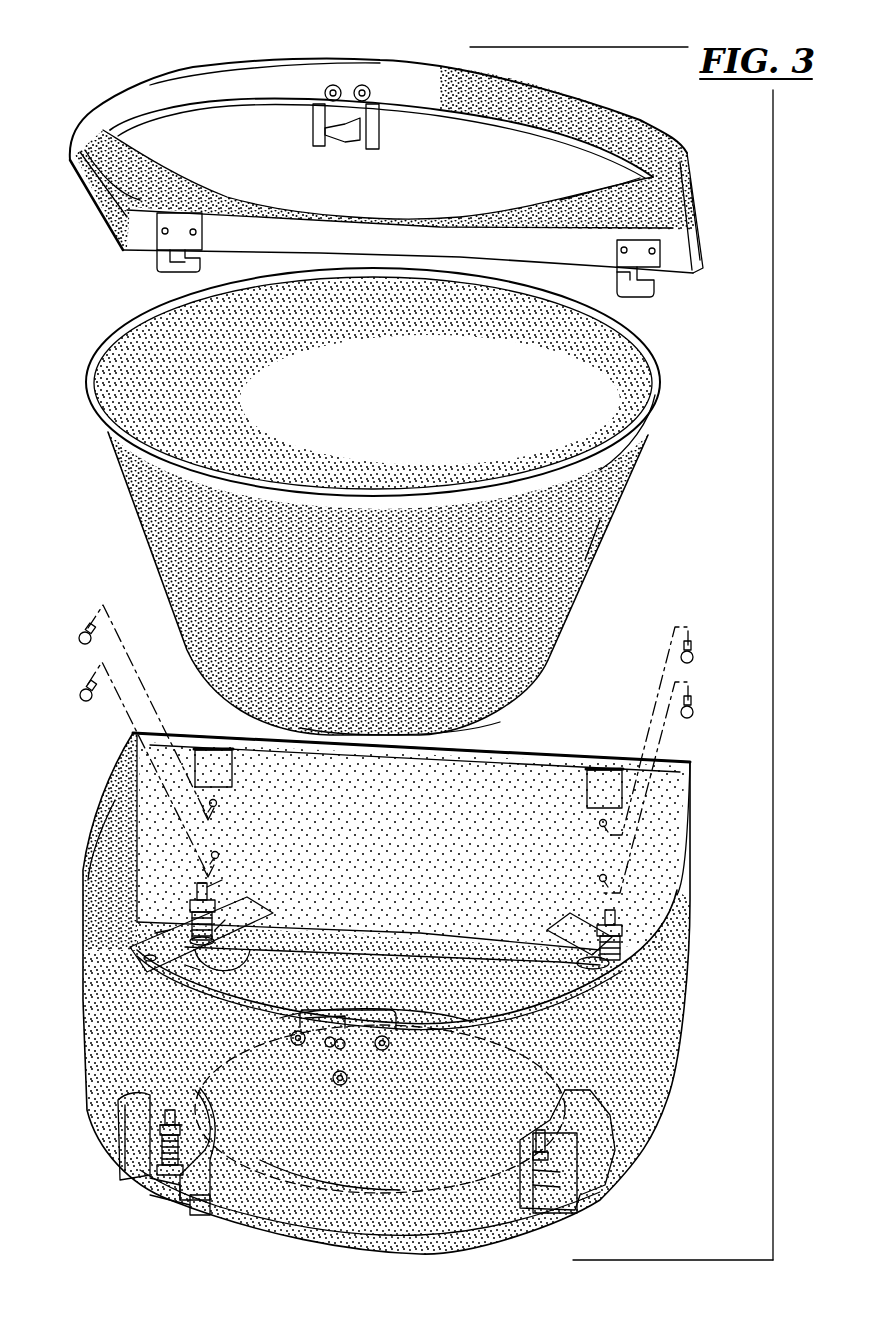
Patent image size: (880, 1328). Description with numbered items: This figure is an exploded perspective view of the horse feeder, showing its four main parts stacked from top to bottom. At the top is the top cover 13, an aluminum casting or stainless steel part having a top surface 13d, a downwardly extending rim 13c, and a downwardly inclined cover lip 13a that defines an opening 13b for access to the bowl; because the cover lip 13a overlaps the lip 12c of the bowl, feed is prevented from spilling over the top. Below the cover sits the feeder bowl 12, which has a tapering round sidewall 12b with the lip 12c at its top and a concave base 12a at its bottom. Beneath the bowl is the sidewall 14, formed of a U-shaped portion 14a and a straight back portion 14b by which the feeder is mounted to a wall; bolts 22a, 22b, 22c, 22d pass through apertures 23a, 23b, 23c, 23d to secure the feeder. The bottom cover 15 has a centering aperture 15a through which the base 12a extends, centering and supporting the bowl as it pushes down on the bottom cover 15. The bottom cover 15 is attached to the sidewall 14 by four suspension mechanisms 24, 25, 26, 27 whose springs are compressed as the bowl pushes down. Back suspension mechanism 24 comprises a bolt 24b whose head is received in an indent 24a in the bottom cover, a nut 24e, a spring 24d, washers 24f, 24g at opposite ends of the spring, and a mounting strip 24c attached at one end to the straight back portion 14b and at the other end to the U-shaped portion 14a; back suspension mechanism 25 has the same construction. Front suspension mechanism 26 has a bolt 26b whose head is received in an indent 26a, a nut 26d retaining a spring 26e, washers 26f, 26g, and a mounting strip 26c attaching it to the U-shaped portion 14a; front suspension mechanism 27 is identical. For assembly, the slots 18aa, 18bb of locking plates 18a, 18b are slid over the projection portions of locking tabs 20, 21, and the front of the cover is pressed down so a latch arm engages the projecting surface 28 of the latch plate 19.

The feeder bowl 12 is at (133, 510).
The concave base 12a is at (520, 703).
The tapering round sidewall 12b is at (580, 535).
The lip 12c is at (653, 393).
The top cover 13 is at (668, 128).
The cover lip 13a is at (653, 177).
The opening 13b is at (577, 200).
The downwardly extending rim 13c is at (190, 85).
The top surface 13d is at (138, 185).
The sidewall 14 is at (672, 1018).
The U-shaped portion 14a is at (120, 880).
The straight back portion 14b is at (402, 838).
The bottom cover 15 is at (608, 1204).
The centering aperture 15a is at (430, 950).
The locking plate 18a is at (640, 290).
The slot 18aa is at (615, 268).
The locking plate 18b is at (170, 255).
The slot 18bb is at (203, 256).
The latch plate 19 is at (372, 135).
The locking tab 20 is at (605, 768).
The locking tab 21 is at (227, 748).
The bolt 22a is at (693, 650).
The bolt 22b is at (693, 707).
The bolt 22c is at (85, 630).
The bolt 22d is at (86, 688).
The aperture 23a is at (600, 823).
The aperture 23b is at (600, 878).
The aperture 23c is at (218, 803).
The aperture 23d is at (218, 853).
The back suspension mechanism 24 is at (188, 910).
The indent 24a is at (232, 968).
The bolt 24b is at (213, 887).
The mounting strip 24c is at (155, 933).
The spring 24d is at (270, 915).
The nut 24e is at (215, 930).
The washer 24f is at (185, 965).
The washer 24g is at (200, 883).
The back suspension mechanism 25 is at (624, 939).
The front suspension mechanism 26 is at (196, 1143).
The indent 26a is at (188, 1210).
The bolt 26b is at (125, 1062).
The mounting strip 26c is at (140, 1140).
The nut 26d is at (195, 1135).
The spring 26e is at (207, 1213).
The washer 26f is at (163, 1197).
The washer 26g is at (193, 1140).
The front suspension mechanism 27 is at (527, 1147).
The projecting surface 28 is at (318, 128).